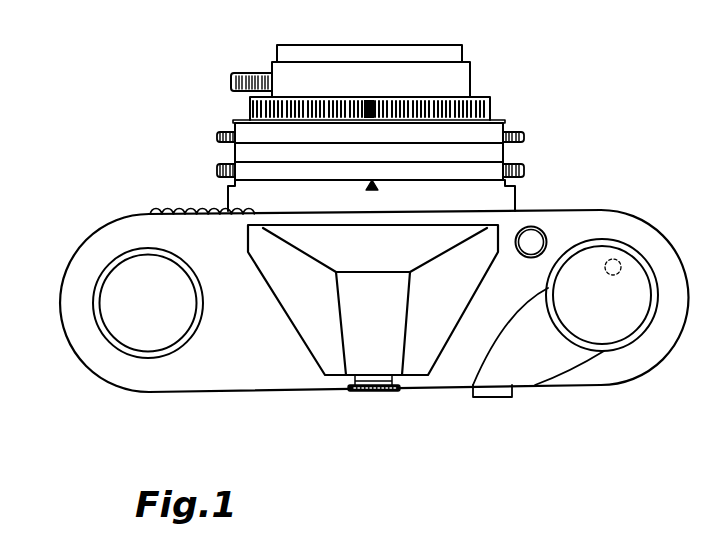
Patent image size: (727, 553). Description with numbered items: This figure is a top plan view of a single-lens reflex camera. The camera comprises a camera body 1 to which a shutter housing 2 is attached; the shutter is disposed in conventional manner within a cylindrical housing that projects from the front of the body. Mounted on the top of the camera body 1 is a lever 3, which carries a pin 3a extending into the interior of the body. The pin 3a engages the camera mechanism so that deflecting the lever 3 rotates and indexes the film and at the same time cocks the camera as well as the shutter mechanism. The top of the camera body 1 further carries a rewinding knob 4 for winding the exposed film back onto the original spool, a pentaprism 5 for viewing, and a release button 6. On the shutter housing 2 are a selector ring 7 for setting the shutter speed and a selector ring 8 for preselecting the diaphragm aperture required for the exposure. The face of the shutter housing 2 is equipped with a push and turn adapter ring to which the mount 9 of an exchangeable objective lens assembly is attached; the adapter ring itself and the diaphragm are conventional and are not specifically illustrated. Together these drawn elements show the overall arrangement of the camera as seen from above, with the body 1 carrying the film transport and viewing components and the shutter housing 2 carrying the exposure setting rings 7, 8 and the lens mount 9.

The camera body 1 is at (225, 378).
The shutter housing 2 is at (500, 147).
The lever 3 is at (522, 375).
The pin 3a is at (617, 263).
The rewinding knob 4 is at (118, 328).
The pentaprism 5 is at (333, 363).
The release button 6 is at (534, 240).
The selector ring 7 is at (243, 168).
The selector ring 8 is at (243, 133).
The mount 9 is at (450, 52).